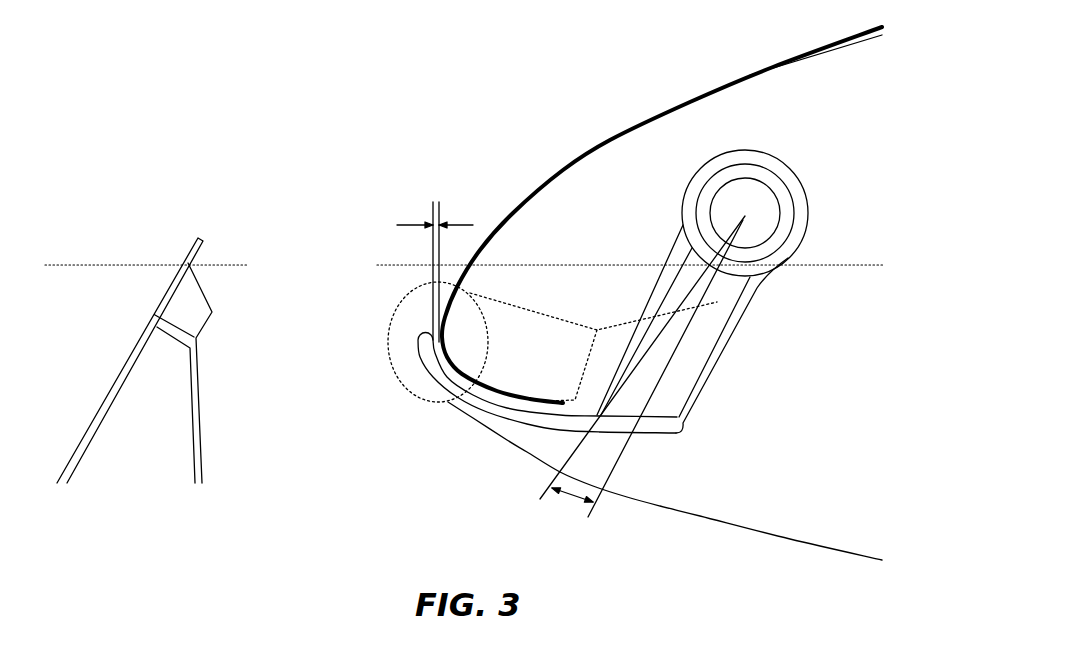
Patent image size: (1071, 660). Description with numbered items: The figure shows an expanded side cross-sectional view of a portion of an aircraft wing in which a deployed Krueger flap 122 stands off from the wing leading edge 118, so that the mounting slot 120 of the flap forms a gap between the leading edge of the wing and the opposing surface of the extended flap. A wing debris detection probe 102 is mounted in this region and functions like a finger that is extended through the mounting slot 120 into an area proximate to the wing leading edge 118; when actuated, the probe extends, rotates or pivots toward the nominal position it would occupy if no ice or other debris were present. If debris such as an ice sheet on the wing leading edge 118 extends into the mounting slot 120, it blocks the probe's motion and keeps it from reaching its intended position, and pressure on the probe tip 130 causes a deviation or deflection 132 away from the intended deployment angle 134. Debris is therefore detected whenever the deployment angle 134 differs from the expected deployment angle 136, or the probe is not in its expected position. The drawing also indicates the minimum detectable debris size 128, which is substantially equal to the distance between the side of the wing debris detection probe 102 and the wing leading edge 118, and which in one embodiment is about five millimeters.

The wing debris detection probe 102 is at (450, 404).
The wing leading edge 118 is at (653, 113).
The mounting slot 120 is at (487, 336).
The Krueger flap 122 is at (172, 283).
The minimum detectable debris size 128 is at (438, 202).
The probe tip 130 is at (425, 345).
The deflection 132 is at (570, 497).
The deployment angle 134 is at (593, 512).
The expected deployment angle 136 is at (542, 490).